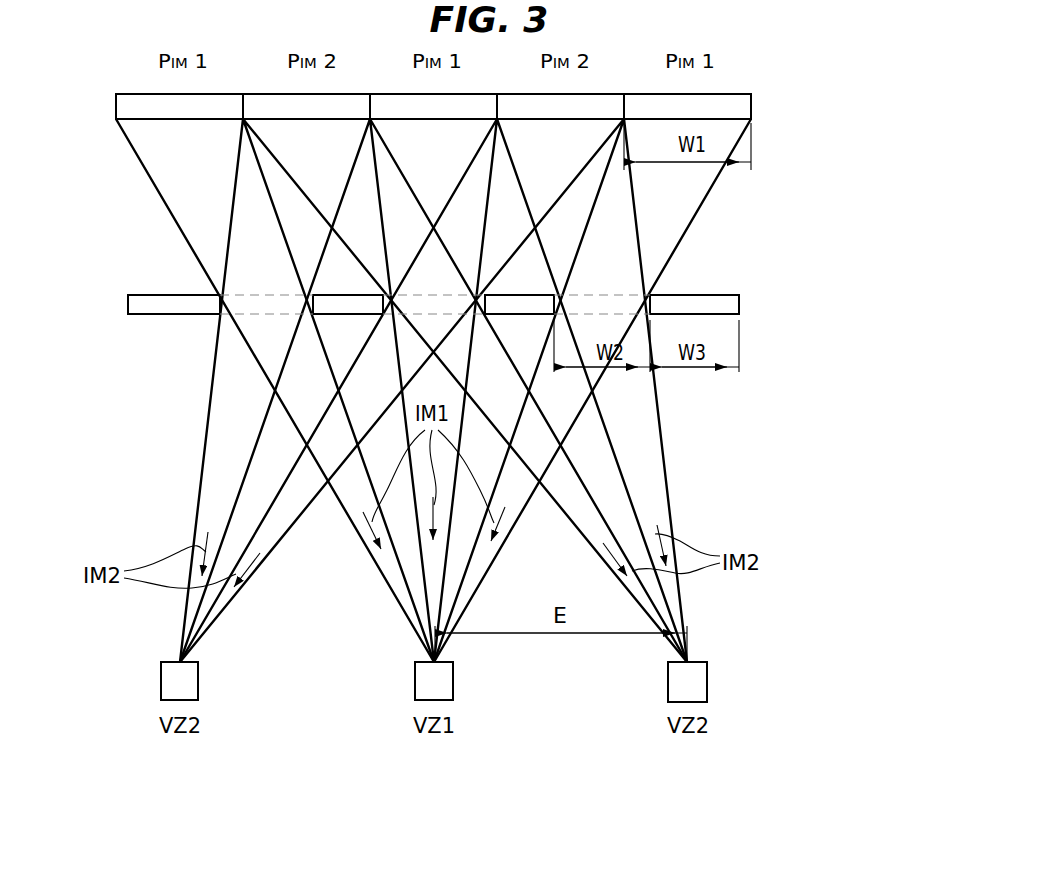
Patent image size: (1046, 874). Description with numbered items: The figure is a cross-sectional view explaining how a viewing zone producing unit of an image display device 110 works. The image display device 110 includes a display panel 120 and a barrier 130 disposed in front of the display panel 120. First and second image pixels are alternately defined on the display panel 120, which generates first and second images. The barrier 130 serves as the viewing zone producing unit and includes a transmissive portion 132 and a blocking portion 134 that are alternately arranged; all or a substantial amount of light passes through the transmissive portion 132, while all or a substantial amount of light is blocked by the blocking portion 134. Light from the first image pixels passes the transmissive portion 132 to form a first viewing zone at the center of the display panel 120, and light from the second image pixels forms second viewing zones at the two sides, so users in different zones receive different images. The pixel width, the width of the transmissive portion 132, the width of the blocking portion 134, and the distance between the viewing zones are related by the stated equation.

The image display device 110 is at (868, 120).
The display panel 120 is at (751, 105).
The barrier 130 is at (443, 359).
The transmissive portion 132 is at (257, 321).
The blocking portion 134 is at (146, 323).